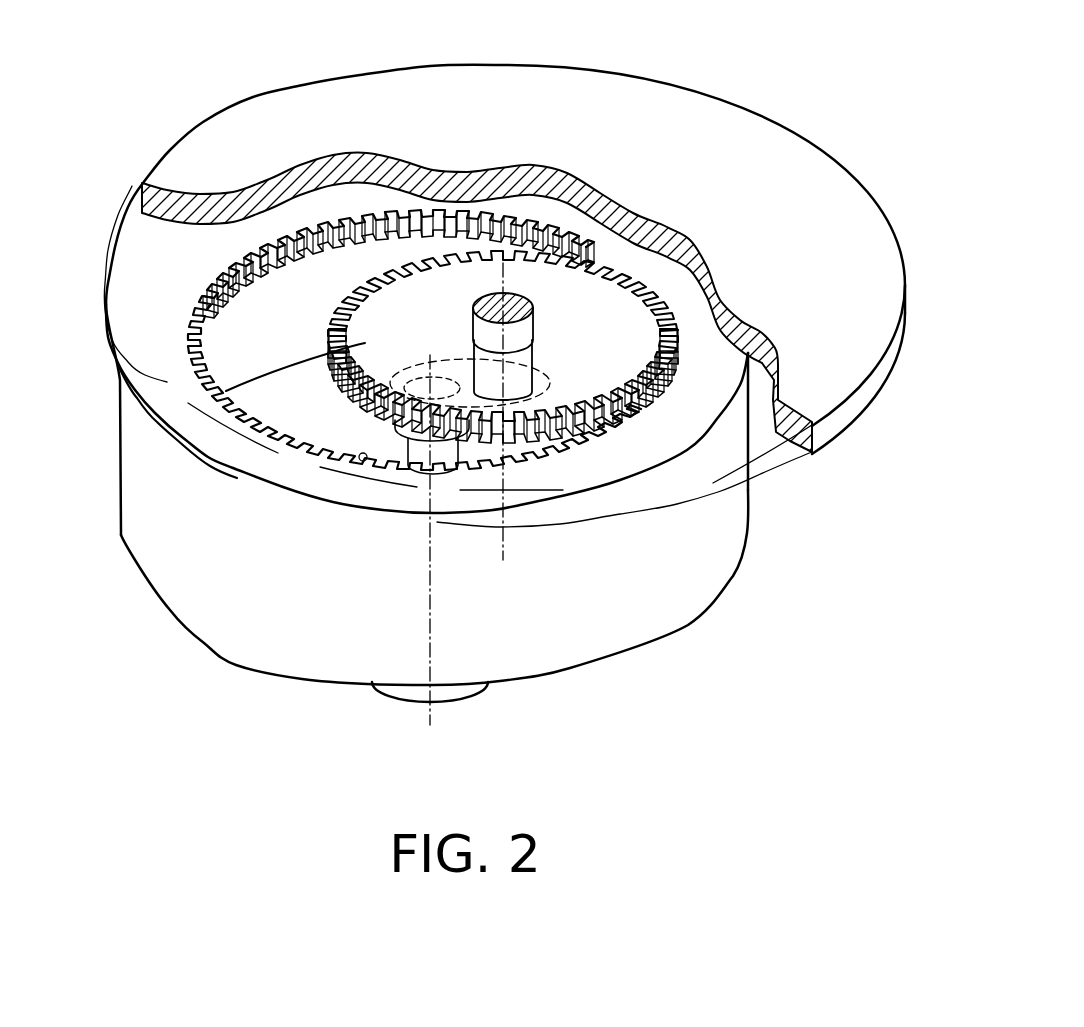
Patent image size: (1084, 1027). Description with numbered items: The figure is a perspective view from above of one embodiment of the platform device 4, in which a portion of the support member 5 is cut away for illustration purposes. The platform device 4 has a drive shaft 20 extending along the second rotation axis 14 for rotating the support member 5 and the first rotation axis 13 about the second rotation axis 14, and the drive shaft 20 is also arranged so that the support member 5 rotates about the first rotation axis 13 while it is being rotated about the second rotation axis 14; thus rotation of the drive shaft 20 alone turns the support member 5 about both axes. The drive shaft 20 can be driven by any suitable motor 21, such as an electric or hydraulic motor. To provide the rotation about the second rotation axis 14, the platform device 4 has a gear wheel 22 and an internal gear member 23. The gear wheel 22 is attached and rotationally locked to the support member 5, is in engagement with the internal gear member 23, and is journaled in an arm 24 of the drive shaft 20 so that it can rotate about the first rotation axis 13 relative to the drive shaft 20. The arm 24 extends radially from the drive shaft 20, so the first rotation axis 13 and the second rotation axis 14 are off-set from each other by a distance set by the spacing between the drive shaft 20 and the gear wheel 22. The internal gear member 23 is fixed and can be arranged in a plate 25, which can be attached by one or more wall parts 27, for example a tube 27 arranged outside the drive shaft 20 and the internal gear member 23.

The platform device 4 is at (862, 449).
The support member 5 is at (670, 150).
The first rotation axis 13 is at (503, 540).
The second rotation axis 14 is at (430, 572).
The drive shaft 20 is at (417, 447).
The motor 21 is at (407, 687).
The gear wheel 22 is at (580, 313).
The internal gear member 23 is at (330, 213).
The arm 24 is at (457, 372).
The plate 25 is at (168, 325).
The wall part 27 is at (237, 612).